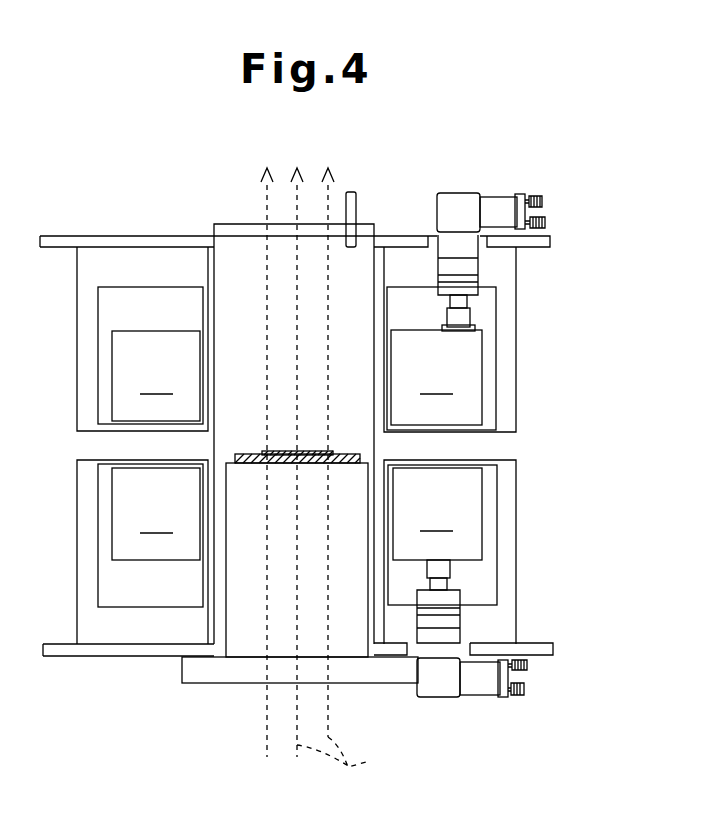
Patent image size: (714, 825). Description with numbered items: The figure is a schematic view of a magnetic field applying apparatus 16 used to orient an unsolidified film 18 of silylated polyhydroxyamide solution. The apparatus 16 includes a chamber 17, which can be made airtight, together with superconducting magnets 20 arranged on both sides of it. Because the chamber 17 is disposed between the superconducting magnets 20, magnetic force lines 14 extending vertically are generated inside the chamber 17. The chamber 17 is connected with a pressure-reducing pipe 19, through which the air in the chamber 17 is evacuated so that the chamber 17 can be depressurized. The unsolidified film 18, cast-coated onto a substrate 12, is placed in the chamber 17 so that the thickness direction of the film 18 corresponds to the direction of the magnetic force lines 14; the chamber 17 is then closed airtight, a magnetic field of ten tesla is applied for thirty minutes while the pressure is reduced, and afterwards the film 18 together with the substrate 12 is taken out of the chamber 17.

The substrate 12 is at (337, 466).
The magnetic force lines 14 is at (332, 471).
The magnetic field applying apparatus 16 is at (559, 178).
The chamber 17 is at (236, 244).
The unsolidified film 18 is at (308, 452).
The pressure-reducing pipe 19 is at (352, 206).
The superconducting magnets 20 is at (296, 445).